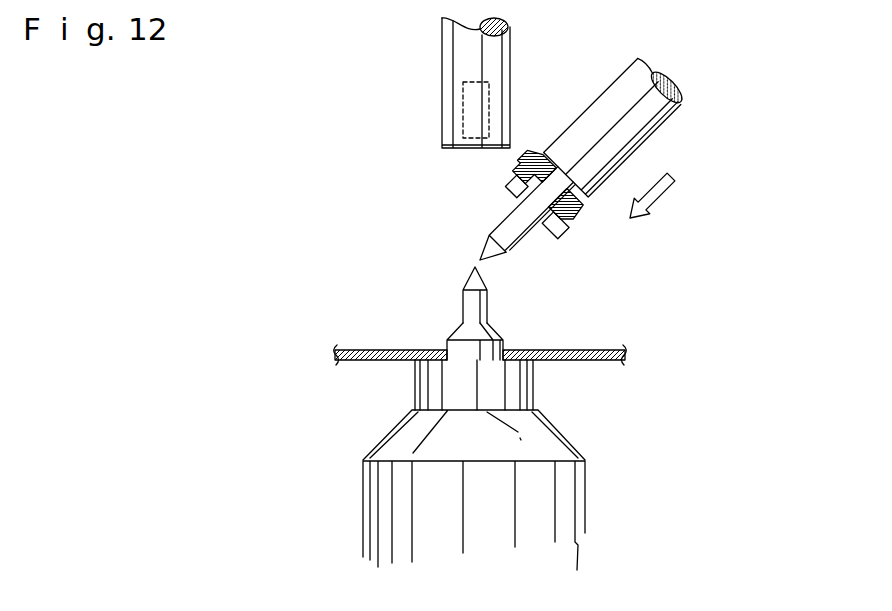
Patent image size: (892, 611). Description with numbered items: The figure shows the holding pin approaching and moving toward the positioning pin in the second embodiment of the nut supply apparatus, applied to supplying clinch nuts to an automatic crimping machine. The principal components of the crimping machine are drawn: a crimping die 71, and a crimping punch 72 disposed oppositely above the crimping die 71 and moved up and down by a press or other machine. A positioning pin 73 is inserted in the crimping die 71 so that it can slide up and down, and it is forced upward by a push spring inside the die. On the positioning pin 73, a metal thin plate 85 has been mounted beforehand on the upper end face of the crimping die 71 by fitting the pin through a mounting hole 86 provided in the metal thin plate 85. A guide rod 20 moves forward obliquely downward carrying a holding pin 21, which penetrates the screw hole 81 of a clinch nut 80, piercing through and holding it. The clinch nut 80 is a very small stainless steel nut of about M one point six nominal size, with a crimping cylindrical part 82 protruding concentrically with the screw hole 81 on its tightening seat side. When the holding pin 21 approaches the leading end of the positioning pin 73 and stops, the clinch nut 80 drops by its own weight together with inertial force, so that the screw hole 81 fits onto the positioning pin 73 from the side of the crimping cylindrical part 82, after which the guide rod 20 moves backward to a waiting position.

The guide rod 20 is at (660, 128).
The holding pin 21 is at (516, 248).
The crimping die 71 is at (380, 503).
The crimping punch 72 is at (452, 60).
The positioning pin 73 is at (472, 308).
The clinch nut 80 is at (584, 222).
The screw hole 81 is at (534, 158).
The crimping cylindrical part 82 is at (516, 185).
The metal thin plate 85 is at (363, 350).
The mounting hole 86 is at (458, 345).